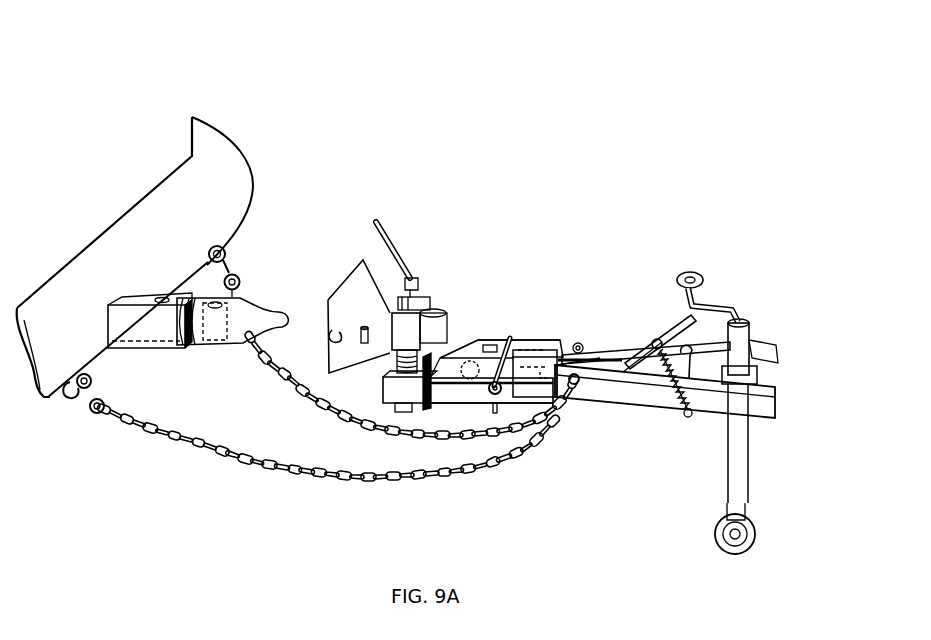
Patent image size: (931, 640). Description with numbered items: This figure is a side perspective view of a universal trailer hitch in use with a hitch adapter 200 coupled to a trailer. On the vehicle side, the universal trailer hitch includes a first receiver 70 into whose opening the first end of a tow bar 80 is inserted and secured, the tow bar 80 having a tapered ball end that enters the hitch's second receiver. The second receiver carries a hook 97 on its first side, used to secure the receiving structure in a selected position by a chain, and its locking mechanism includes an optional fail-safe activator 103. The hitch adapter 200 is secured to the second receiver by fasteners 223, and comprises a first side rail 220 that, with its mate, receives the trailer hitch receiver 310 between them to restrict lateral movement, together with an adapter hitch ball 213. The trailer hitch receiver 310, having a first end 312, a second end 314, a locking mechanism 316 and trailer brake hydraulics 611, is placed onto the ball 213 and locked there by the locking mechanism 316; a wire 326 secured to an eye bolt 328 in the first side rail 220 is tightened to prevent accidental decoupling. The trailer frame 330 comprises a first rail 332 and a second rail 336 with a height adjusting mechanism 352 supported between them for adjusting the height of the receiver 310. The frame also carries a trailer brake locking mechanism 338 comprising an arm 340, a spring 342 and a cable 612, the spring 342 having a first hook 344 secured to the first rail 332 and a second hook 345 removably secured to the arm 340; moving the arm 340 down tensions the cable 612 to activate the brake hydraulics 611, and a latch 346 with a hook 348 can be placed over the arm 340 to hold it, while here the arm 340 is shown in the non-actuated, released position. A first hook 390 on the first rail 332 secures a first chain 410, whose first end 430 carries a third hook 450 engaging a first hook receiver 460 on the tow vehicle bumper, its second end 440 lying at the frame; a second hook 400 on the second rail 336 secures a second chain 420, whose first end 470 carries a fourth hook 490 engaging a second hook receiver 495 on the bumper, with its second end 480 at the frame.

The first receiver 70 is at (155, 330).
The tow bar 80 is at (242, 332).
The hook 97 is at (327, 330).
The fail-safe activator 103 is at (428, 282).
The hitch adapter 200 is at (433, 312).
The adapter hitch ball 213 is at (406, 404).
The first side rail 220 is at (428, 404).
The fasteners 223 is at (352, 266).
The trailer hitch receiver 310 is at (547, 340).
The first end 312 is at (464, 345).
The second end 314 is at (556, 342).
The locking mechanism 316 is at (490, 344).
The wire 326 is at (481, 345).
The eye bolt 328 is at (512, 400).
The trailer frame 330 is at (622, 336).
The first rail 332 is at (778, 412).
The second rail 336 is at (773, 340).
The trailer brake locking mechanism 338 is at (642, 302).
The arm 340 is at (671, 340).
The spring 342 is at (679, 392).
The first hook 344 is at (687, 419).
The second hook 345 is at (656, 338).
The latch 346 is at (777, 355).
The hook 348 is at (758, 343).
The height adjusting mechanism 352 is at (760, 378).
The first hook 390 is at (608, 376).
The second hook 400 is at (576, 342).
The first chain 410 is at (340, 482).
The second chain 420 is at (330, 399).
The first end 430 is at (120, 415).
The second end 440 is at (569, 424).
The third hook 450 is at (100, 388).
The first hook receiver 460 is at (68, 392).
The first end 470 is at (300, 347).
The second end 480 is at (510, 440).
The fourth hook 490 is at (234, 275).
The second hook receiver 495 is at (210, 258).
The trailer brake hydraulics 611 is at (528, 340).
The cable 612 is at (605, 340).